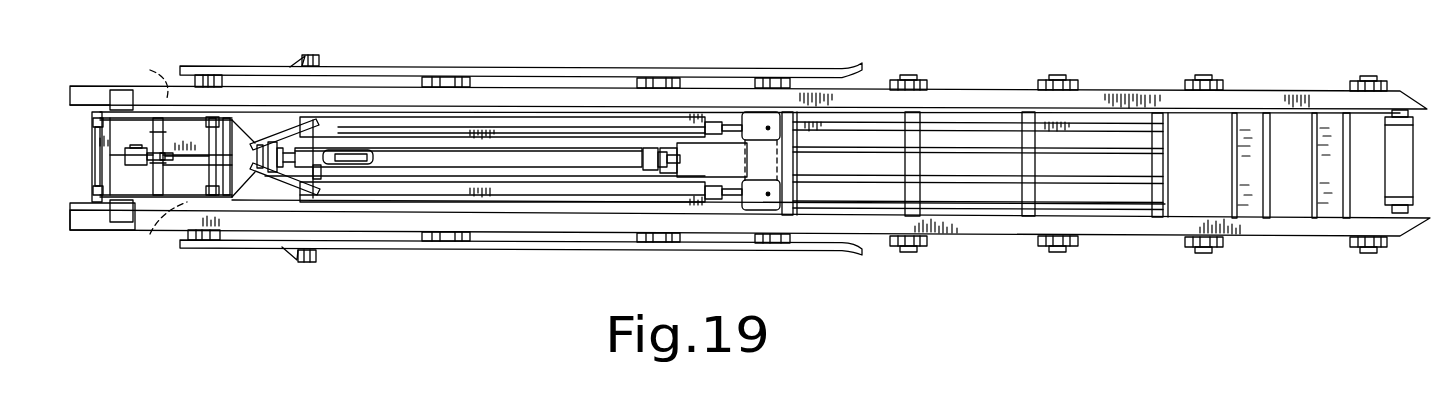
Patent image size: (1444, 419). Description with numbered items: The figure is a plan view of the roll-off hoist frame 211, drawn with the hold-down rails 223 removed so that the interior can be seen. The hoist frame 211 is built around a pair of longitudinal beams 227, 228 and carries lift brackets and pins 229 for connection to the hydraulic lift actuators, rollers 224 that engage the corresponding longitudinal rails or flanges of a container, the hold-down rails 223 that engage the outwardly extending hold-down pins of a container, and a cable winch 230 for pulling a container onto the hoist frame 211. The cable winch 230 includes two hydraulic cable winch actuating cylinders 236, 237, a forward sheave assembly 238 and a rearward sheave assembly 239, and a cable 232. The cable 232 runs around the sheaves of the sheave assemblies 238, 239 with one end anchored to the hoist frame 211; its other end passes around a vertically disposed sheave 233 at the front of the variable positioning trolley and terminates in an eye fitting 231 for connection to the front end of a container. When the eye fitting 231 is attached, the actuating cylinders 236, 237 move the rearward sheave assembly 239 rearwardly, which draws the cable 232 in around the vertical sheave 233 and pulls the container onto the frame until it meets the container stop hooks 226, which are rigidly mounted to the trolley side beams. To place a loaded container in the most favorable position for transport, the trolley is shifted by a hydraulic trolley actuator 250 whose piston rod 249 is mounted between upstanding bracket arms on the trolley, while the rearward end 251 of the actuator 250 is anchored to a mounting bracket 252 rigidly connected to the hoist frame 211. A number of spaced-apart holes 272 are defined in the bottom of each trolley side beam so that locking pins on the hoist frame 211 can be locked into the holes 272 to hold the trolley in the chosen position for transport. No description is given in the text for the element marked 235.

The hoist frame 211 is at (783, 30).
The hold-down rails 223 is at (663, 70).
The rollers 224 is at (932, 78).
The container stop hooks 226 is at (121, 90).
The longitudinal beam 227 is at (1013, 93).
The longitudinal beam 228 is at (1002, 230).
The lift brackets and pins 229 is at (303, 62).
The cable winch 230 is at (265, 192).
The eye fitting 231 is at (366, 166).
The cable 232 is at (161, 155).
The vertically disposed sheave 233 is at (151, 166).
The member 235 is at (1118, 4).
The hydraulic cable winch actuating cylinder 236 is at (493, 118).
The hydraulic cable winch actuating cylinder 237 is at (493, 196).
The forward sheave assembly 238 is at (273, 120).
The rearward sheave assembly 239 is at (760, 118).
The piston rod 249 is at (229, 163).
The hydraulic trolley actuator 250 is at (537, 166).
The rearward end 251 is at (655, 163).
The mounting bracket 252 is at (670, 178).
The holes 272 is at (156, 155).